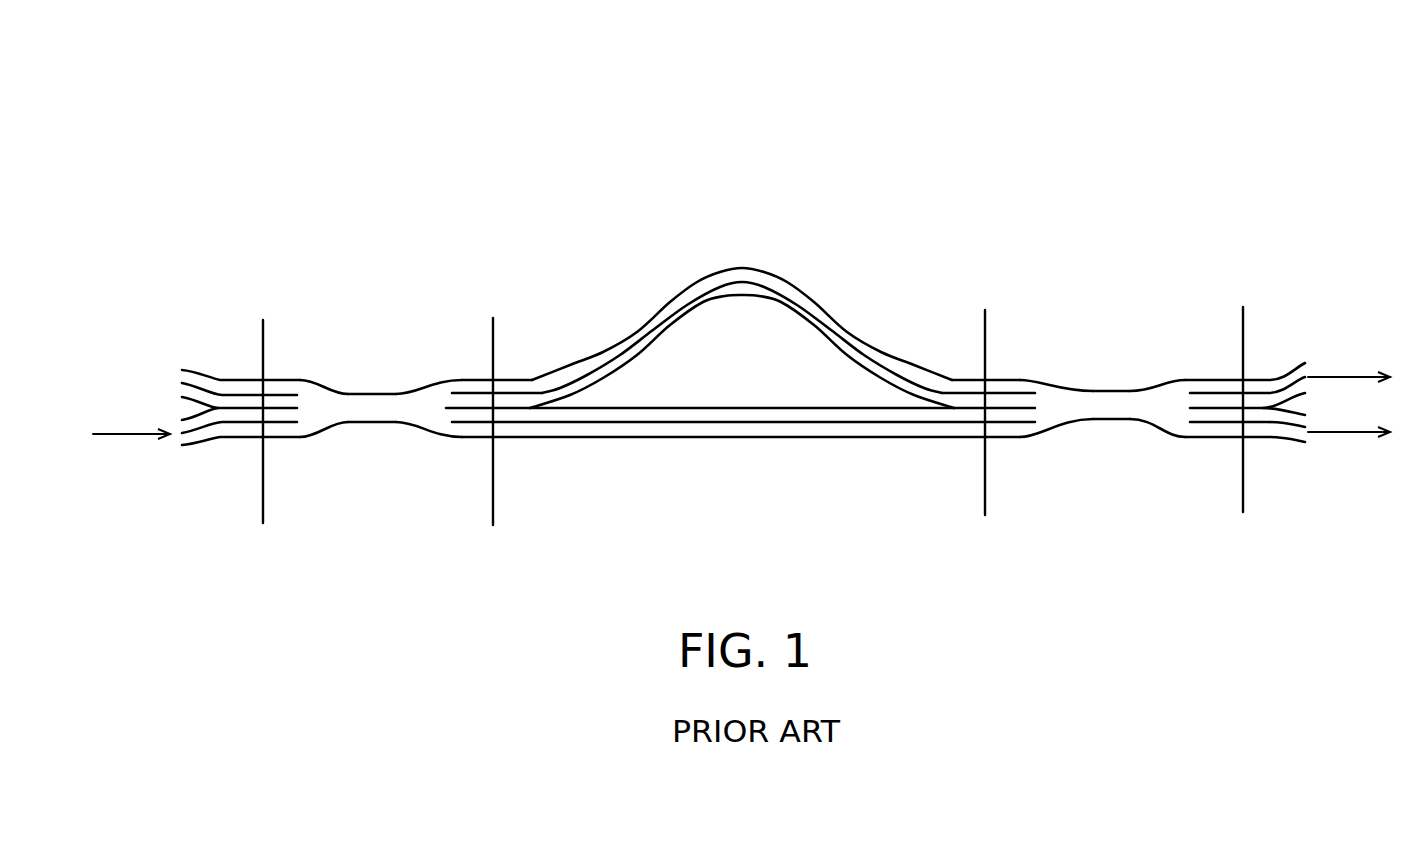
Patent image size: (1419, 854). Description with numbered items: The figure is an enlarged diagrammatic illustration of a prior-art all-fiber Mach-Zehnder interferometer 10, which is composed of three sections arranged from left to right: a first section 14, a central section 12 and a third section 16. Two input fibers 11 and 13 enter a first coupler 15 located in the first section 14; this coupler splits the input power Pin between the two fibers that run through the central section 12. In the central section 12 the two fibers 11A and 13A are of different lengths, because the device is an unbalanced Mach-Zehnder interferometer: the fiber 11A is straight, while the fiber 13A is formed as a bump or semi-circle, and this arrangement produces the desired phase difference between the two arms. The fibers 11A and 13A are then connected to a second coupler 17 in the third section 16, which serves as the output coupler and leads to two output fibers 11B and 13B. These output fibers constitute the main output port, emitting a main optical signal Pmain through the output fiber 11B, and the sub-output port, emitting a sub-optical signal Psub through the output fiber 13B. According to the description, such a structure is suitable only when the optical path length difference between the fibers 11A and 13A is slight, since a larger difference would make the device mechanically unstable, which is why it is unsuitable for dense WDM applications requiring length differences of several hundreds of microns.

The all-fiber Mach-Zehnder interferometer 10 is at (915, 180).
The input fiber 11 is at (217, 433).
The straight fiber 11A is at (656, 420).
The output fiber 11B is at (1282, 430).
The central section 12 is at (822, 483).
The input fiber 13 is at (207, 380).
The bump-shaped fiber 13A is at (710, 283).
The output fiber 13B is at (1272, 377).
The first section 14 is at (377, 468).
The first coupler 15 is at (365, 403).
The third section 16 is at (1130, 465).
The second coupler 17 is at (1098, 403).